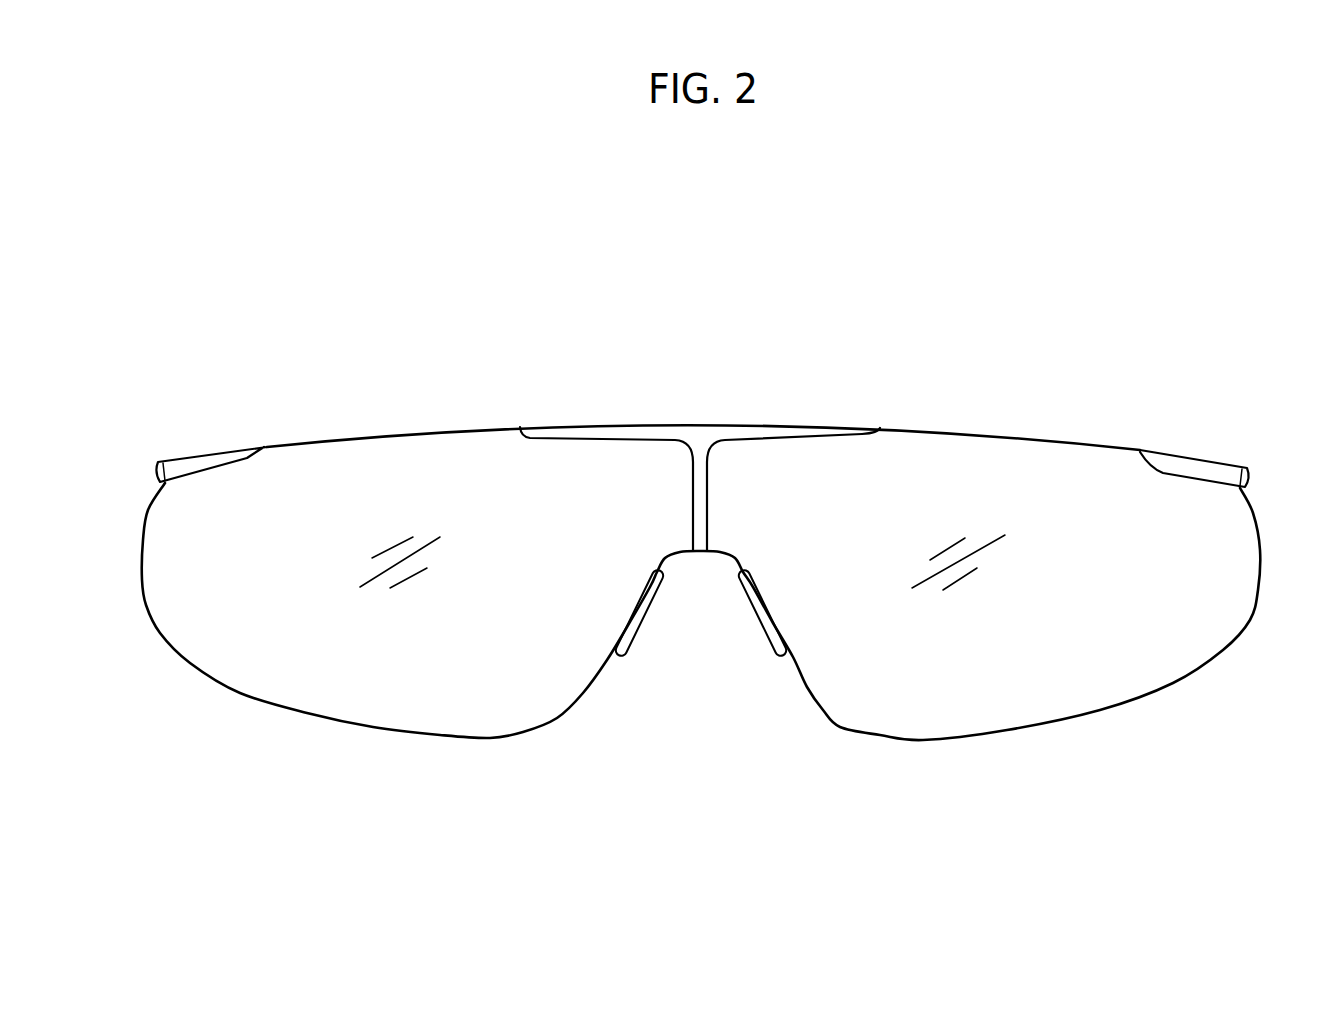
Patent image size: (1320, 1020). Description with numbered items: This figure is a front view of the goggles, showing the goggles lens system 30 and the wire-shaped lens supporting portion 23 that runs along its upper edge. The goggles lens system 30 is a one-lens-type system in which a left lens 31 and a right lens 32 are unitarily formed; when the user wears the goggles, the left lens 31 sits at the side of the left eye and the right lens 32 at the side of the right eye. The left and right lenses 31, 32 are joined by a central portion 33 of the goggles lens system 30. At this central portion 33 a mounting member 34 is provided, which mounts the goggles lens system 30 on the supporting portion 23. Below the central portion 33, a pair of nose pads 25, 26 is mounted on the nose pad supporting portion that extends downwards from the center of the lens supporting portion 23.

The goggles lens system 30 is at (582, 783).
The lens supporting portion 23 is at (208, 468).
The mounting member 34 is at (703, 440).
The central portion 33 is at (670, 570).
The nose pad 26 is at (642, 633).
The nose pad 25 is at (760, 635).
The right lens 32 is at (324, 688).
The left lens 31 is at (1085, 690).